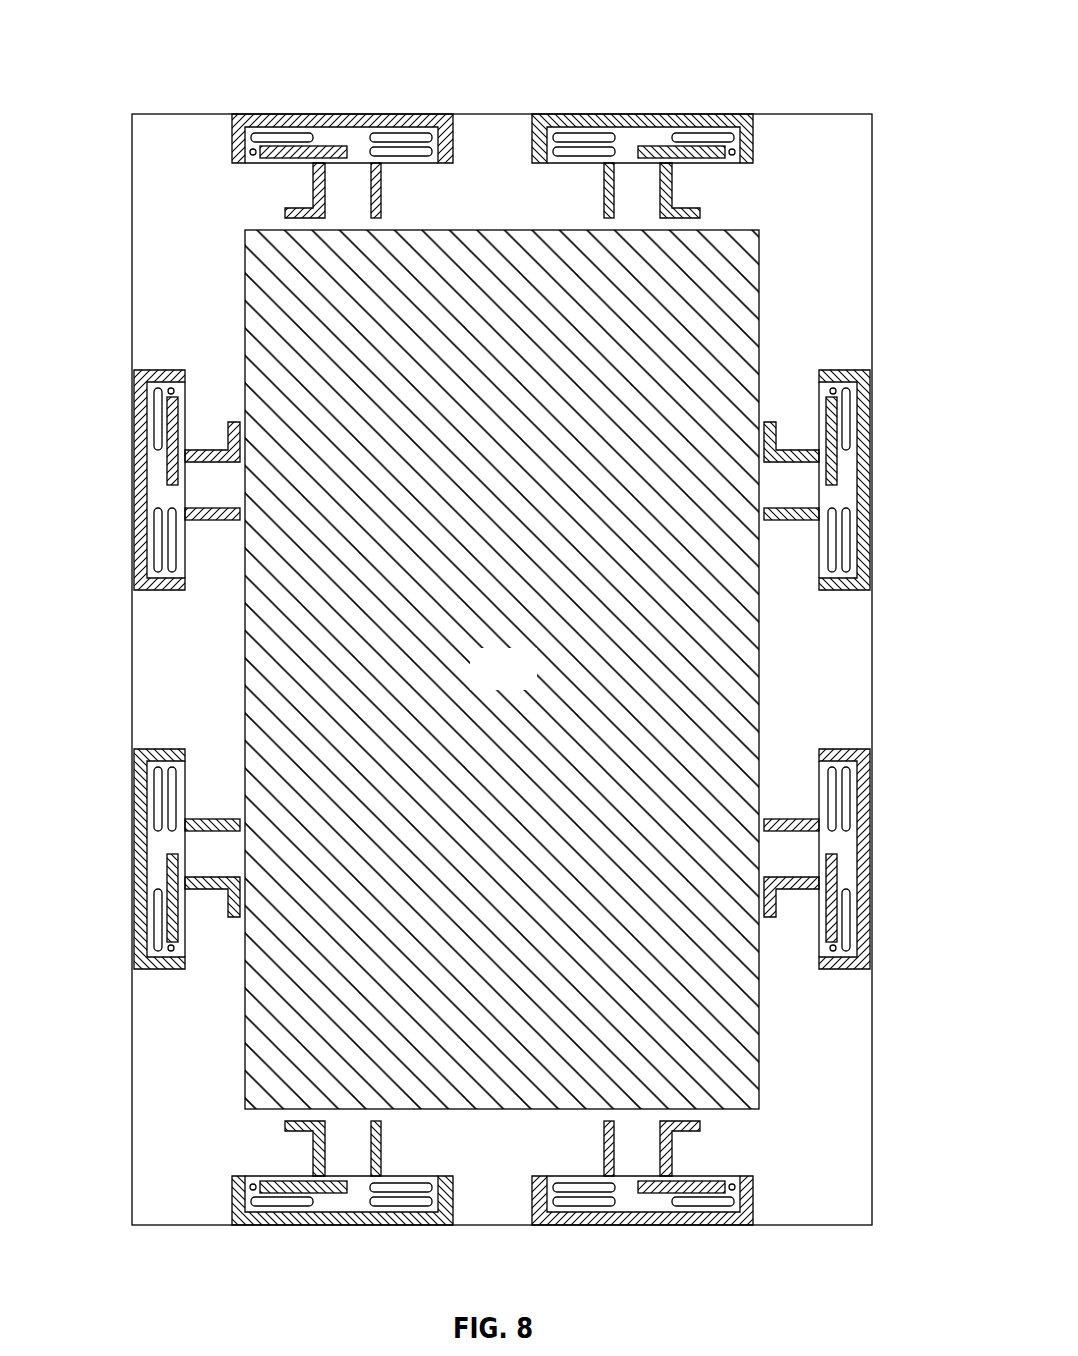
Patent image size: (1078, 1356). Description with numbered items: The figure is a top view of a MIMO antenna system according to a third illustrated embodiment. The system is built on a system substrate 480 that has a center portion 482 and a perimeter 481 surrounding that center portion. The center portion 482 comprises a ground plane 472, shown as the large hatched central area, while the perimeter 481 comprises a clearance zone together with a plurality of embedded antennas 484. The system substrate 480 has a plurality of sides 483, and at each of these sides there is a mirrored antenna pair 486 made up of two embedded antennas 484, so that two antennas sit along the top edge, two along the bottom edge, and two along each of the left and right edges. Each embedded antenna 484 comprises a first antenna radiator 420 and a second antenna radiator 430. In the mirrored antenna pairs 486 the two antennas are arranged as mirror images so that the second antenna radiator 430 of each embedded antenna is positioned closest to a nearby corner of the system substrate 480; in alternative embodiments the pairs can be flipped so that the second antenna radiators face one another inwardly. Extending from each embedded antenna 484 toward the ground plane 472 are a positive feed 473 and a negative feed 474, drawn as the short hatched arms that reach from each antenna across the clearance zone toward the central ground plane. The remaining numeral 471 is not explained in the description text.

The first antenna radiator 420 is at (605, 114).
The second antenna radiator 430 is at (707, 158).
The frame member 471 is at (852, 282).
The ground plane 472 is at (698, 984).
The positive feed 473 is at (811, 453).
The negative feed 474 is at (805, 521).
The system substrate 480 is at (502, 646).
The perimeter 481 is at (150, 266).
The center portion 482 is at (525, 683).
The sides 483 is at (134, 667).
The embedded antennas 484 is at (502, 671).
The mirrored antenna pair 486 is at (548, 114).